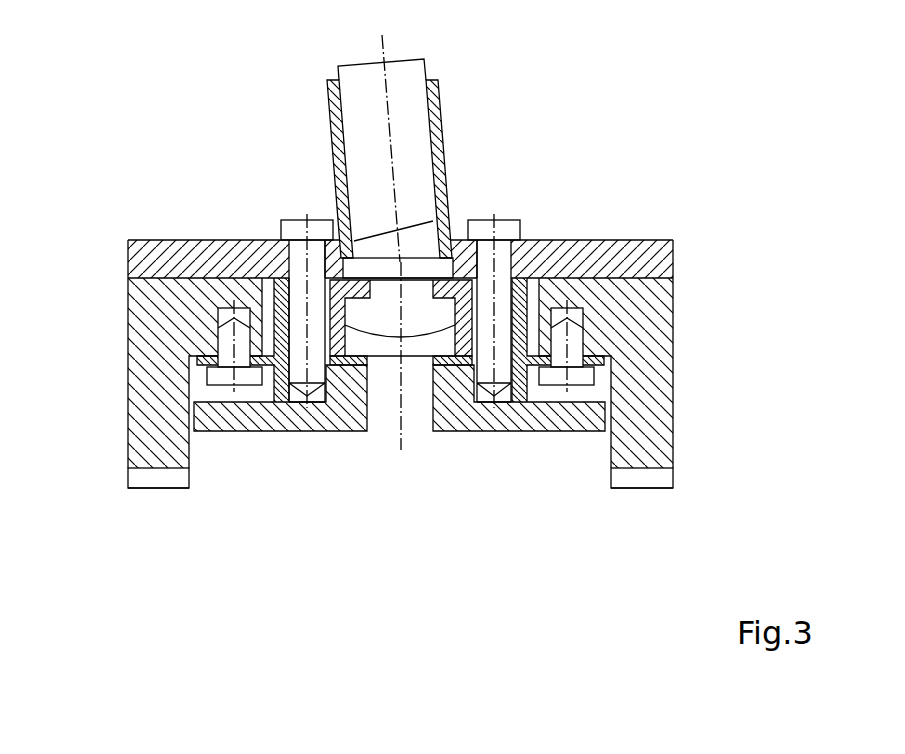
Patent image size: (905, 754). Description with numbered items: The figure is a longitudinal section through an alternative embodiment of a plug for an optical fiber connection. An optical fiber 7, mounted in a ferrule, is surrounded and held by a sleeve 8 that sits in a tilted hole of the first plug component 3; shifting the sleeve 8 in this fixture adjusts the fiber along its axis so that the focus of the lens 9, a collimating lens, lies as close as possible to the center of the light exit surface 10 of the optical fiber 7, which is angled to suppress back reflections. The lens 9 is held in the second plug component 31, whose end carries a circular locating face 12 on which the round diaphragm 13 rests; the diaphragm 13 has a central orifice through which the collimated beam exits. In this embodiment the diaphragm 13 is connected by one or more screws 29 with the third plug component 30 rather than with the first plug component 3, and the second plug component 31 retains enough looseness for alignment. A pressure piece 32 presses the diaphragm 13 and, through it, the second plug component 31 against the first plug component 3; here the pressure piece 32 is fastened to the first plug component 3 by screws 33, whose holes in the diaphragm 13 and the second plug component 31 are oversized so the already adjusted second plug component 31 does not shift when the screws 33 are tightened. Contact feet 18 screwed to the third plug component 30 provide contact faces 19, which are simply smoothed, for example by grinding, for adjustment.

The first plug component 3 is at (158, 247).
The optical fiber 7 is at (353, 71).
The sleeve 8 is at (440, 112).
The lens 9 is at (442, 312).
The light exit surface 10 is at (410, 227).
The circular locating face 12 is at (332, 357).
The diaphragm 13 is at (273, 357).
The contact feet 18 is at (140, 480).
The contact faces 19 is at (148, 488).
The screws 29 is at (223, 344).
The third plug component 30 is at (673, 411).
The second plug component 31 is at (238, 295).
The pressure piece 32 is at (527, 423).
The screws 33 is at (297, 248).